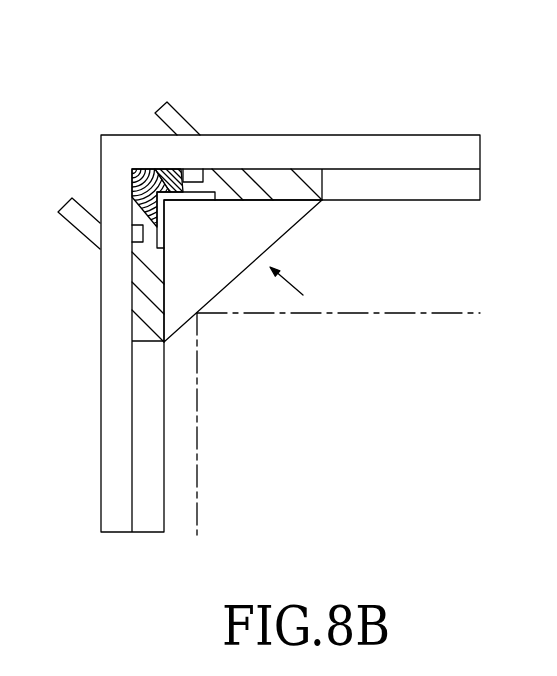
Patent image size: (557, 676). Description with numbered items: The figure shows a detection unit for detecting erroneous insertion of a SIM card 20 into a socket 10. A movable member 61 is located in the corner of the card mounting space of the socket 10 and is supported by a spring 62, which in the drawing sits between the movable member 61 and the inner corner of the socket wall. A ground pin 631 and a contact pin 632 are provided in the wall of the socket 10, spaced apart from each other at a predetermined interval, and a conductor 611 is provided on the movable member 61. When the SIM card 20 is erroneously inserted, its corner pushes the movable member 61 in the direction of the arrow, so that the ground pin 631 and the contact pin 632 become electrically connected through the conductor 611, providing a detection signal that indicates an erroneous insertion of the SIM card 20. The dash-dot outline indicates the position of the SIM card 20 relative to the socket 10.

The socket 10 is at (100, 458).
The SIM card 20 is at (427, 313).
The movable member 61 is at (290, 229).
The conductor 611 is at (213, 192).
The spring 62 is at (162, 170).
The ground pin 631 is at (140, 248).
The contact pin 632 is at (205, 176).